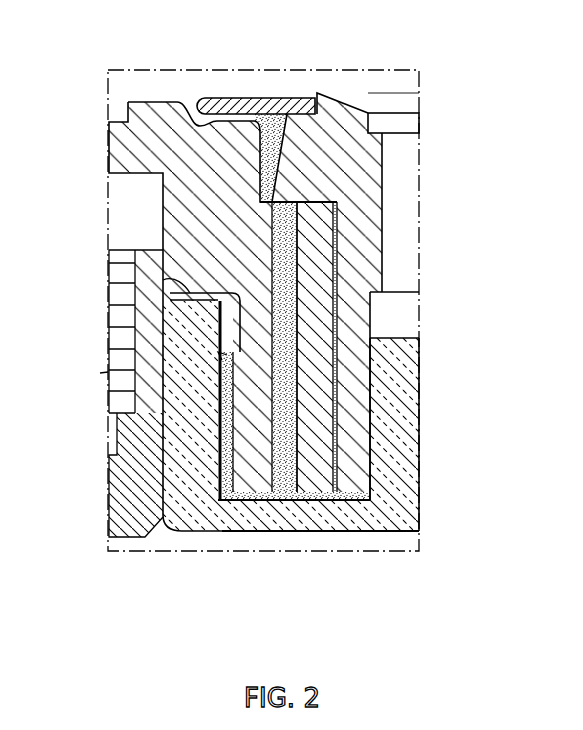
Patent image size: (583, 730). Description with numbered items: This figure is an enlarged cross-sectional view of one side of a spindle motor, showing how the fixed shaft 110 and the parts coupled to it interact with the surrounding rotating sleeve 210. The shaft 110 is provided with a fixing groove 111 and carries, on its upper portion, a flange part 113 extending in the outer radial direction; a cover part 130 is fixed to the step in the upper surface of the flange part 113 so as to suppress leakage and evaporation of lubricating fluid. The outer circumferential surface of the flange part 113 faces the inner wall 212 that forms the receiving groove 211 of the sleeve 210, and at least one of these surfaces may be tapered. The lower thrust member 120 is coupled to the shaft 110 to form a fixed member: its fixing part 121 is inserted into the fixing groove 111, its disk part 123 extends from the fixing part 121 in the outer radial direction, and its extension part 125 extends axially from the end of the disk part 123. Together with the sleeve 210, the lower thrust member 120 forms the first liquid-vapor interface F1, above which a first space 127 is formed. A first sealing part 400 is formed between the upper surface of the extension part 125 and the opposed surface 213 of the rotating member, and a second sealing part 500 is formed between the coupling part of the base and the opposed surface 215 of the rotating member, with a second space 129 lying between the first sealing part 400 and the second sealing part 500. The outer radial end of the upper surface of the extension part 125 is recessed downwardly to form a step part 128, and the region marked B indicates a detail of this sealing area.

The shaft 110 is at (328, 296).
The fixing groove 111 is at (363, 274).
The flange part 113 is at (313, 148).
The lower thrust member 120 is at (291, 474).
The fixing part 121 is at (394, 476).
The disk part 123 is at (300, 522).
The extension part 125 is at (196, 462).
The first space 127 is at (286, 337).
The step part 128 is at (112, 383).
The second space 129 is at (163, 332).
The cover part 130 is at (282, 114).
The sleeve 210 is at (272, 271).
The receiving groove 211 is at (305, 178).
The inner wall 212 is at (240, 97).
The surface of the rotating member 213 is at (163, 250).
The surface of the rotating member 215 is at (230, 293).
The first sealing part 400 is at (232, 327).
The second sealing part 500 is at (163, 285).
The detail region B is at (100, 372).
The first liquid-vapor interface F1 is at (222, 360).